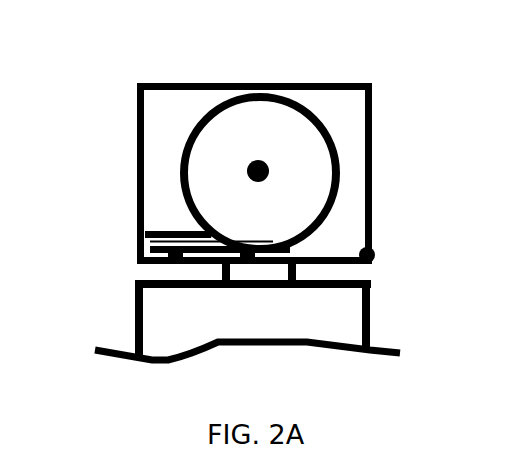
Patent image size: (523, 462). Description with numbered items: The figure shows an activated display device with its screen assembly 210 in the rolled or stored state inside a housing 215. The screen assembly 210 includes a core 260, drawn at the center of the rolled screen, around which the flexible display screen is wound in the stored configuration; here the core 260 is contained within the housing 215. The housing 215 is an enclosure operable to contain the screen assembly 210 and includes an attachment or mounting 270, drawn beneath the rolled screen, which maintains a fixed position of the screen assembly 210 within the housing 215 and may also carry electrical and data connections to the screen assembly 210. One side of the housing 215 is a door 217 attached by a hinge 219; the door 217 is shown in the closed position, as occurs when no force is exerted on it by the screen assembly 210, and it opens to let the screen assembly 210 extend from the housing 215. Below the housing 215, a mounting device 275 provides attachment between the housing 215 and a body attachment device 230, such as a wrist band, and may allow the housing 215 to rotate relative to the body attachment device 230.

The housing 215 is at (307, 83).
The door 217 is at (372, 175).
The hinge 219 is at (373, 258).
The screen assembly 210 is at (181, 173).
The core 260 is at (266, 162).
The attachment or mounting 270 is at (165, 259).
The mounting device 275 is at (292, 270).
The body attachment device 230 is at (133, 302).